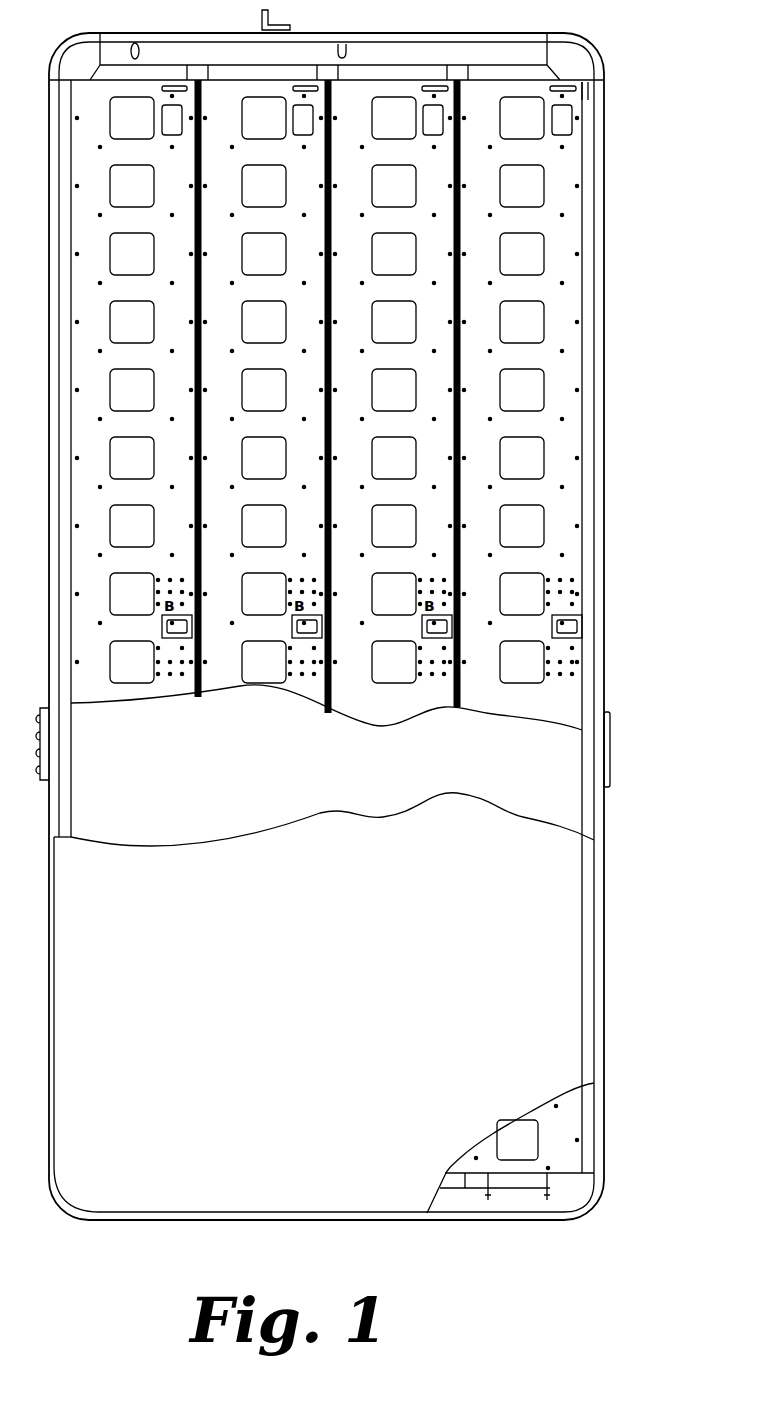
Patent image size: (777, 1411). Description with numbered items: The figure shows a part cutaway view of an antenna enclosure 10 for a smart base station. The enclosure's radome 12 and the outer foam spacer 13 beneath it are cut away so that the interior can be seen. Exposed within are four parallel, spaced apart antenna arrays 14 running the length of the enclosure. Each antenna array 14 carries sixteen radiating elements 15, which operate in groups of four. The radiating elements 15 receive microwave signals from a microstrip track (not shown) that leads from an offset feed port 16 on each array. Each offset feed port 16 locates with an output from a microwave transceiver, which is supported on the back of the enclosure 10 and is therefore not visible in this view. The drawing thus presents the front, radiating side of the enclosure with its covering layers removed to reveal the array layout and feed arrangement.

The antenna enclosure 10 is at (606, 535).
The radome 12 is at (593, 880).
The outer foam spacer 13 is at (575, 795).
The antenna array 14 is at (581, 384).
The radiating element 15 is at (532, 255).
The offset feed port 16 is at (580, 625).